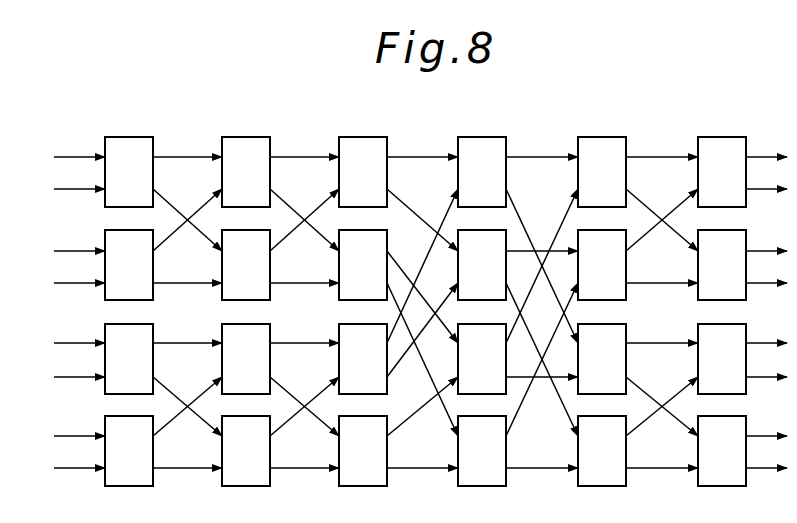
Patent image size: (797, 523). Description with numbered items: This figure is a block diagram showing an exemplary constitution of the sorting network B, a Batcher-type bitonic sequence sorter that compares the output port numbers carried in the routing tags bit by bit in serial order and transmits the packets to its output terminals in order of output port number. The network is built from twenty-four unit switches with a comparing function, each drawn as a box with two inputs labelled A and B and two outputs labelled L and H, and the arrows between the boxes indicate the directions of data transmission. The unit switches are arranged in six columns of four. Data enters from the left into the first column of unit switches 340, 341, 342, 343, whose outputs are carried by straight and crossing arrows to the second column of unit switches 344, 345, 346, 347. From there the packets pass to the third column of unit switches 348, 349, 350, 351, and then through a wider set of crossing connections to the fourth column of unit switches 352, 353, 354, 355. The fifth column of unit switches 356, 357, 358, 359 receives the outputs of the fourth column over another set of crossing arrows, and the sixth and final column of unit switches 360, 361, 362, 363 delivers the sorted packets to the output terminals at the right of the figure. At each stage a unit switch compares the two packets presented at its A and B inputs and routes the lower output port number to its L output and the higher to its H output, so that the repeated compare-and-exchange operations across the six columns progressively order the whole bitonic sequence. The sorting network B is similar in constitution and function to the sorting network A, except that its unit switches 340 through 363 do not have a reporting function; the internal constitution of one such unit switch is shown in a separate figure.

The unit switch 340 is at (129, 136).
The unit switch 341 is at (153, 256).
The unit switch 342 is at (117, 310).
The unit switch 343 is at (117, 402).
The unit switch 344 is at (246, 136).
The unit switch 345 is at (271, 258).
The unit switch 346 is at (234, 310).
The unit switch 347 is at (234, 402).
The unit switch 348 is at (363, 136).
The unit switch 349 is at (351, 216).
The unit switch 350 is at (351, 310).
The unit switch 351 is at (351, 402).
The unit switch 352 is at (482, 136).
The unit switch 353 is at (470, 216).
The unit switch 354 is at (470, 310).
The unit switch 355 is at (470, 402).
The unit switch 356 is at (602, 136).
The unit switch 357 is at (590, 216).
The unit switch 358 is at (590, 310).
The unit switch 359 is at (590, 402).
The unit switch 360 is at (722, 136).
The unit switch 361 is at (710, 216).
The unit switch 362 is at (710, 310).
The unit switch 363 is at (710, 402).